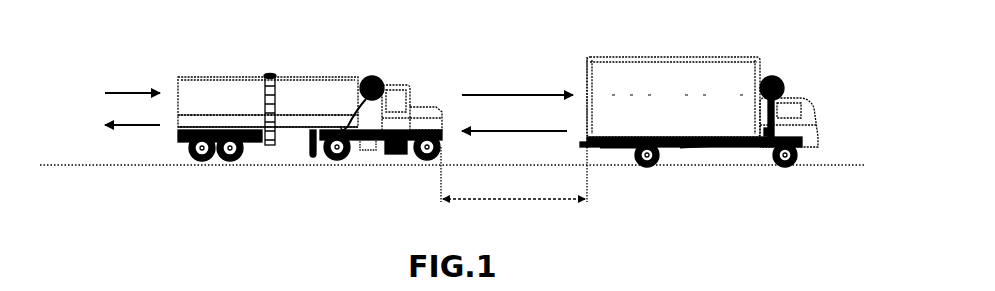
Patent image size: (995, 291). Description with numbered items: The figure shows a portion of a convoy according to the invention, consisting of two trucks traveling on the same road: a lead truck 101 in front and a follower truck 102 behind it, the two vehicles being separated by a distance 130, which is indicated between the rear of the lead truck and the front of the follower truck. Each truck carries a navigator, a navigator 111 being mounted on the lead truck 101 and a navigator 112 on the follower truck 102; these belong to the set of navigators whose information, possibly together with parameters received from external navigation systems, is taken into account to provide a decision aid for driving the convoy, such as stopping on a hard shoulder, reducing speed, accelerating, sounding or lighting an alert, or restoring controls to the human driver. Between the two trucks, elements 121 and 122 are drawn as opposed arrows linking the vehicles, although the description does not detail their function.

The lead truck 101 is at (687, 50).
The follower truck 102 is at (245, 52).
The navigator 111 is at (780, 78).
The navigator 112 is at (381, 78).
The forward communication signal 121 is at (517, 83).
The return communication signal 122 is at (514, 121).
The distance 130 is at (514, 139).